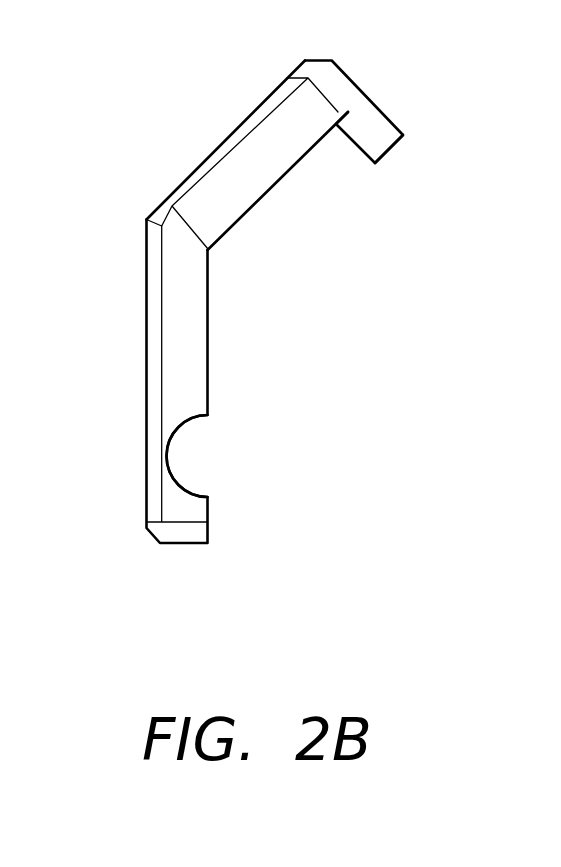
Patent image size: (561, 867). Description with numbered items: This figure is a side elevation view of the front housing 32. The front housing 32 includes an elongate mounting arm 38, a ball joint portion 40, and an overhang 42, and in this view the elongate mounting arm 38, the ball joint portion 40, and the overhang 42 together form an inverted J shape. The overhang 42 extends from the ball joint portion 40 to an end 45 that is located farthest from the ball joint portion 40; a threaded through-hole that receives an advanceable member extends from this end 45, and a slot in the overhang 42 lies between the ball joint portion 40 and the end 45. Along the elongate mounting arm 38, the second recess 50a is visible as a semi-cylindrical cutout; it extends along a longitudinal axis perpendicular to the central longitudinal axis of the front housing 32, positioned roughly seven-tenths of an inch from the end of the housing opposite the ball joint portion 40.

The front housing 32 is at (303, 301).
The elongate mounting arm 38 is at (146, 328).
The ball joint portion 40 is at (265, 192).
The overhang 42 is at (375, 163).
The end of the overhang 45 is at (390, 150).
The second recess 50a is at (165, 453).